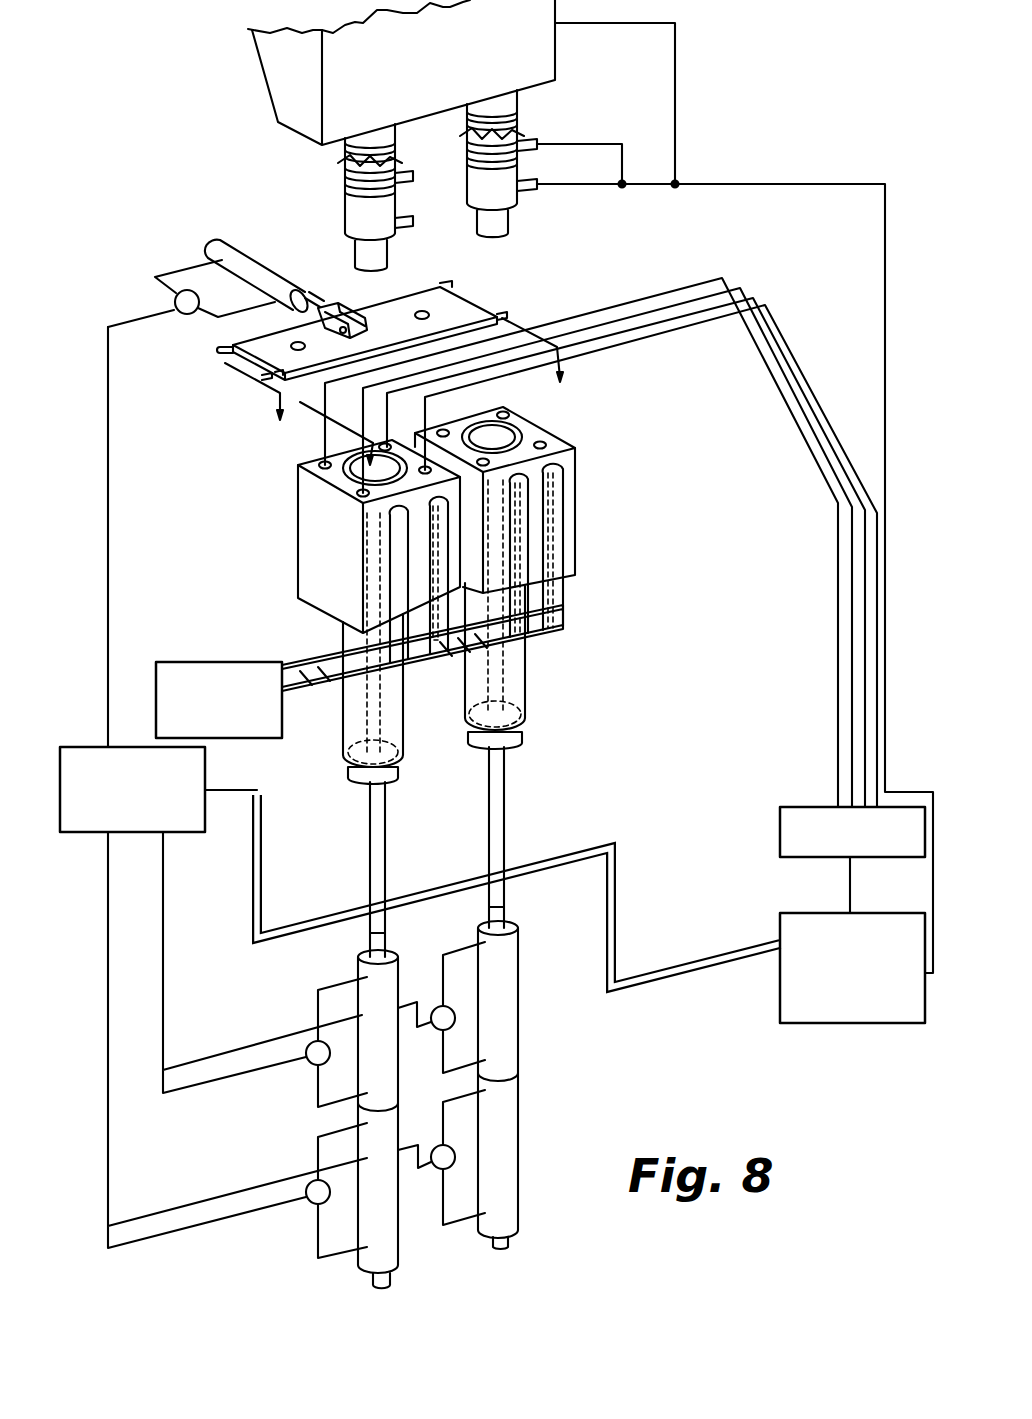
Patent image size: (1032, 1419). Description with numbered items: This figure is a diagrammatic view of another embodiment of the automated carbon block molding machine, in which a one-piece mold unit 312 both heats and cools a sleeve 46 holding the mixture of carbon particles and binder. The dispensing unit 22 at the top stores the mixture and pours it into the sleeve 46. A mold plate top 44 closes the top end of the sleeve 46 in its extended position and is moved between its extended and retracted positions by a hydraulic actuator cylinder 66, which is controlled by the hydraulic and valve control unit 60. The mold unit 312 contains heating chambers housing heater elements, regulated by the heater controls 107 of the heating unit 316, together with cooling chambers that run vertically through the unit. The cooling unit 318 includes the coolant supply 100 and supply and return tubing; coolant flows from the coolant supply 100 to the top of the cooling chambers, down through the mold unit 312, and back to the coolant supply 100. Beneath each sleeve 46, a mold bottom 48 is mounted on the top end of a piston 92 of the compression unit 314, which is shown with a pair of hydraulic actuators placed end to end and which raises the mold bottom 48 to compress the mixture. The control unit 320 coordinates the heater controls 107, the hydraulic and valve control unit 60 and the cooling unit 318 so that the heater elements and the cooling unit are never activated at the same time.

The dispensing unit 22 is at (436, 135).
The hydraulic actuator cylinder 66 is at (237, 281).
The mold plate top 44 is at (480, 298).
The mold unit 312 is at (290, 524).
The heating unit 316 is at (596, 513).
The cooling unit 318 is at (582, 590).
The coolant supply 100 is at (219, 679).
The hydraulic and valve control unit 60 is at (123, 747).
The sleeve 46 is at (466, 675).
The mold bottom 48 is at (397, 778).
The piston 92 is at (388, 858).
The heater controls 107 is at (793, 795).
The control unit 320 is at (797, 913).
The compression unit 314 is at (528, 1112).